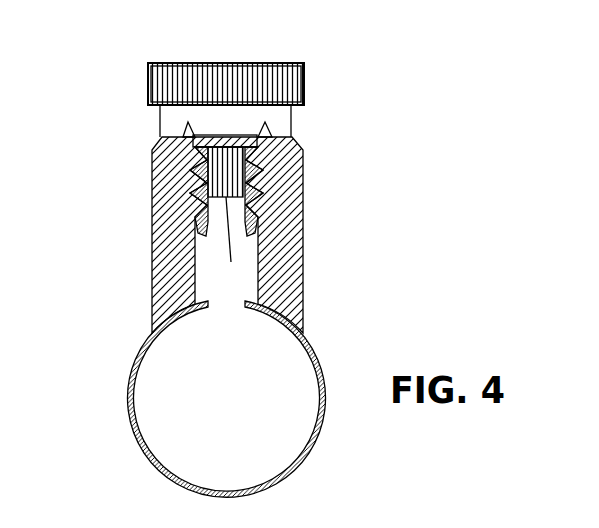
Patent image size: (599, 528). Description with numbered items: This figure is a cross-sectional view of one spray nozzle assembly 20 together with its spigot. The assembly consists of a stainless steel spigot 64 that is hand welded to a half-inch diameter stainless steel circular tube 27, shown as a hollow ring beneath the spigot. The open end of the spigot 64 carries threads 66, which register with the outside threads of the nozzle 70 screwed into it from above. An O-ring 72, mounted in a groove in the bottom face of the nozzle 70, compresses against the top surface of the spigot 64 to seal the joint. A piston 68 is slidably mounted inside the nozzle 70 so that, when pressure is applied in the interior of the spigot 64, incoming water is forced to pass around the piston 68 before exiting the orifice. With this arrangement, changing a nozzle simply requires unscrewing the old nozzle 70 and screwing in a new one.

The spray nozzle assembly 20 is at (400, 99).
The nozzle 70 is at (304, 85).
The O-ring 72 is at (187, 124).
The spigot 64 is at (152, 198).
The threads 66 is at (203, 234).
The piston 68 is at (231, 262).
The circular tube 27 is at (128, 391).